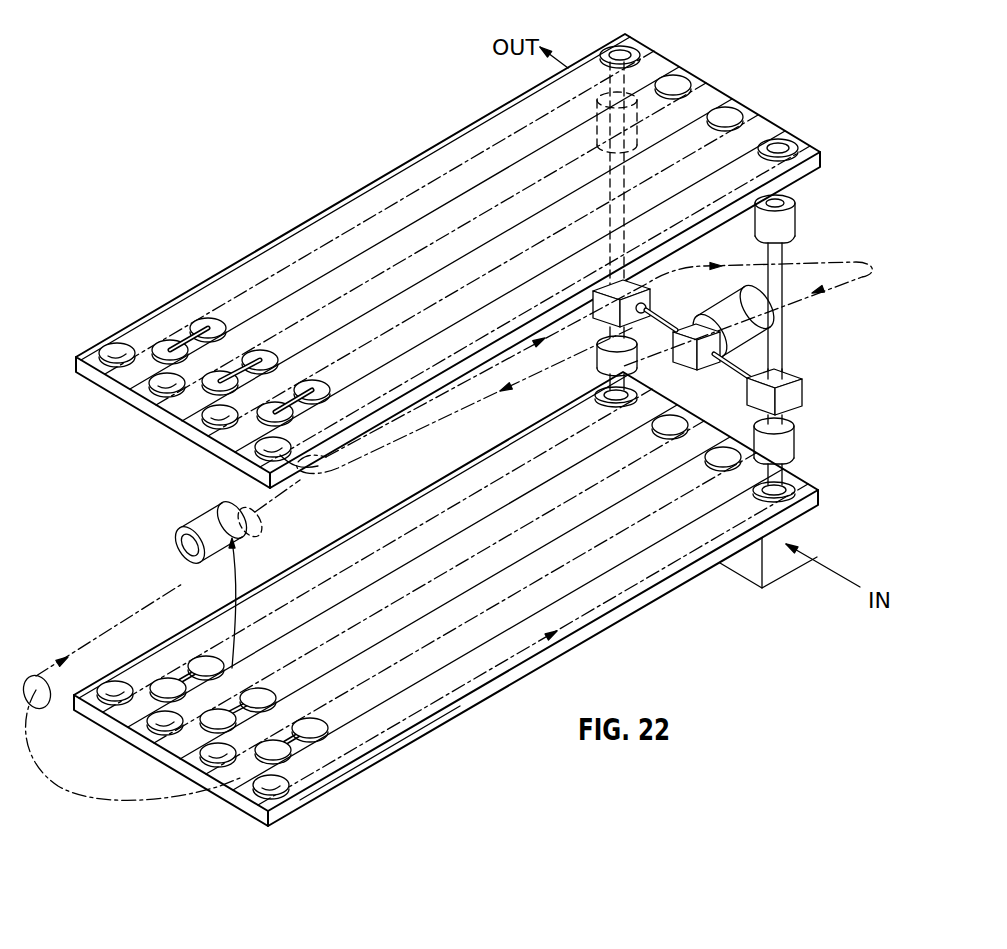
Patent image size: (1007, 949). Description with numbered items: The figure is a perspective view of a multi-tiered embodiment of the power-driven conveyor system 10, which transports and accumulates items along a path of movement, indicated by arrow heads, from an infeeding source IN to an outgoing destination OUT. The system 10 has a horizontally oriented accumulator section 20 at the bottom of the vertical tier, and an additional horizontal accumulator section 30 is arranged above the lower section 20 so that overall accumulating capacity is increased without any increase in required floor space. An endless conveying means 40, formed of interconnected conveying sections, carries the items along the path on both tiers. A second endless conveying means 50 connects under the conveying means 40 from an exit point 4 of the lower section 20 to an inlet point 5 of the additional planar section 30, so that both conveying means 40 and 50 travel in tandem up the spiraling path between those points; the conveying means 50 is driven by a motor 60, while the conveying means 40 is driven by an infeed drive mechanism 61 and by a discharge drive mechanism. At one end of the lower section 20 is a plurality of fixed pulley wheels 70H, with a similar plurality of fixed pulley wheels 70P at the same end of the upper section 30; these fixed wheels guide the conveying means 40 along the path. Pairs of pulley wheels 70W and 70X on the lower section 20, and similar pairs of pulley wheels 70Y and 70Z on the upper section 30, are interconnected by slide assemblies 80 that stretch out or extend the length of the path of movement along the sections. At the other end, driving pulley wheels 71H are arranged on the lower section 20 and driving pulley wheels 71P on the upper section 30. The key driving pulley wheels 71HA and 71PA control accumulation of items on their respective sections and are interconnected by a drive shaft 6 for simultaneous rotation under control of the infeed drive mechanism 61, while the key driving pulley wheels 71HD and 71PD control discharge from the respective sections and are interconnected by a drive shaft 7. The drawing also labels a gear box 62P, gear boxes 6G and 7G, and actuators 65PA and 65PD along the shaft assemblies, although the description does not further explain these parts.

The power-driven conveyor system 10 is at (690, 660).
The horizontally oriented accumulator section 20 is at (482, 698).
The additional horizontal accumulator section 30 is at (318, 212).
The endless conveying means 40 is at (440, 723).
The exit point 4 is at (70, 657).
The inlet point 5 is at (325, 462).
The drive shaft 7 is at (662, 272).
The second endless conveying means 50 is at (60, 800).
The motor 60 is at (178, 527).
The infeed drive mechanism 61 is at (752, 572).
The drive shaft 6 is at (772, 318).
The motor gear box 62P is at (780, 345).
The gear box 6G is at (803, 393).
The gear box 7G is at (600, 302).
The valve actuator 65PA is at (797, 212).
The valve actuator (hidden) 65PD is at (600, 108).
The fixed pulley wheels 70H is at (130, 700).
The interconnected pulley wheels 70W is at (275, 758).
The interconnected pulley wheels 70X is at (322, 735).
The fixed pulley wheels 70P is at (112, 362).
The interconnected pulley wheels 70Y is at (162, 342).
The interconnected pulley wheels 70Z is at (206, 322).
The slide assemblies 80 is at (180, 342).
The driving pulley wheels 71H is at (723, 450).
The key driving pulley wheel 71HA is at (790, 483).
The key driving pulley wheel 71HD is at (638, 395).
The driving pulley wheels 71P is at (726, 116).
The key driving pulley wheel 71PA is at (782, 146).
The key driving pulley wheel 71PD is at (615, 52).